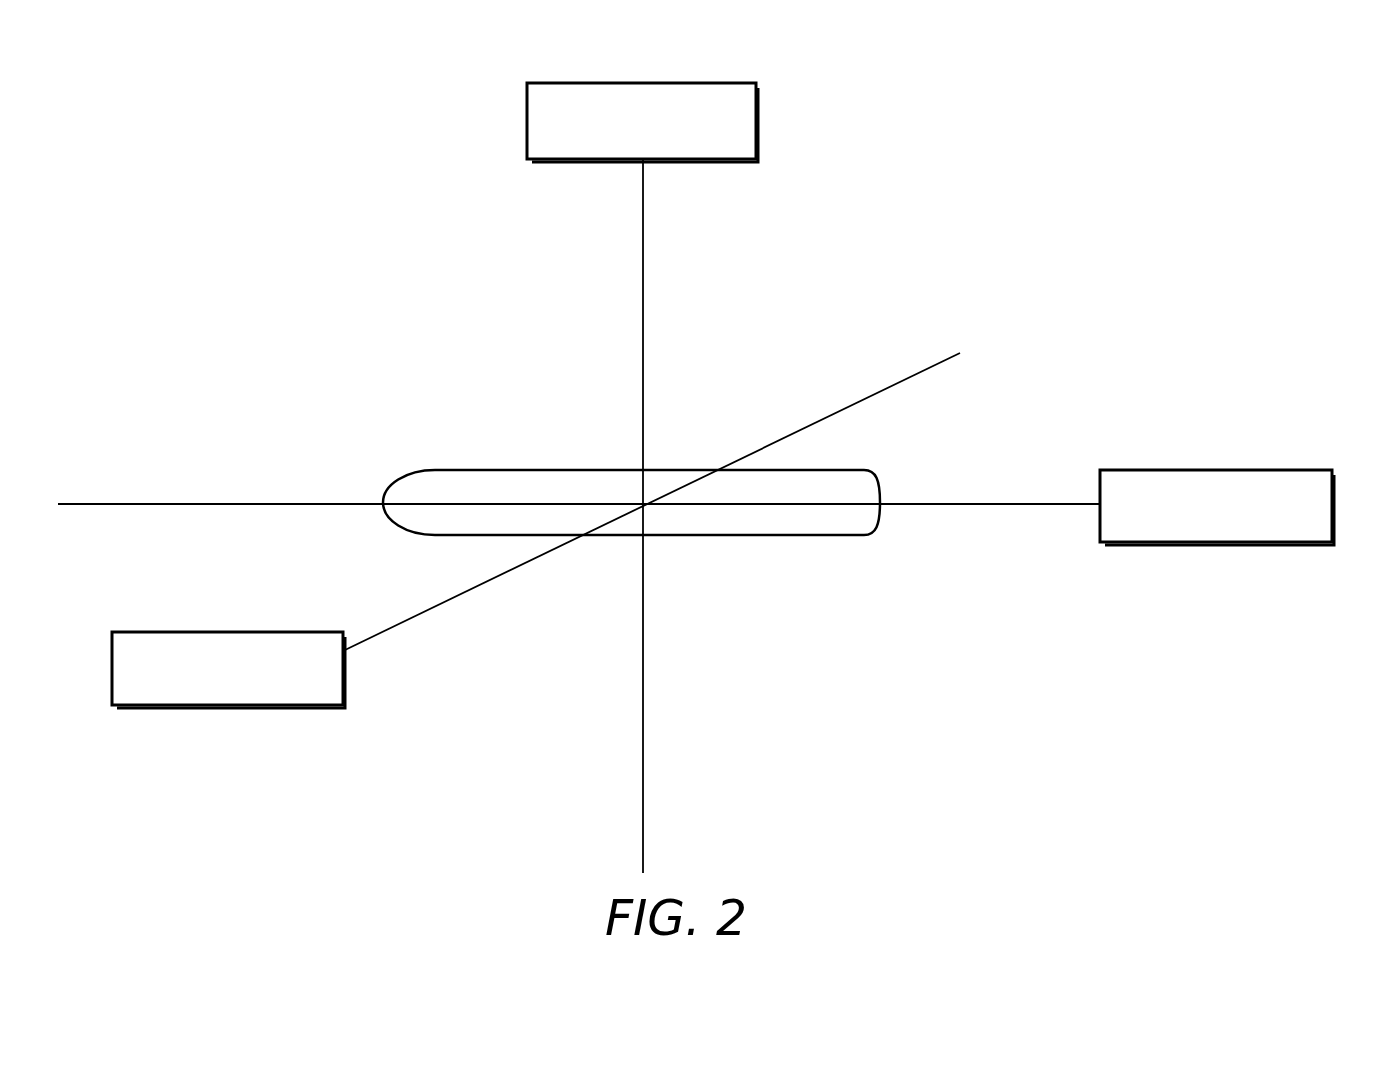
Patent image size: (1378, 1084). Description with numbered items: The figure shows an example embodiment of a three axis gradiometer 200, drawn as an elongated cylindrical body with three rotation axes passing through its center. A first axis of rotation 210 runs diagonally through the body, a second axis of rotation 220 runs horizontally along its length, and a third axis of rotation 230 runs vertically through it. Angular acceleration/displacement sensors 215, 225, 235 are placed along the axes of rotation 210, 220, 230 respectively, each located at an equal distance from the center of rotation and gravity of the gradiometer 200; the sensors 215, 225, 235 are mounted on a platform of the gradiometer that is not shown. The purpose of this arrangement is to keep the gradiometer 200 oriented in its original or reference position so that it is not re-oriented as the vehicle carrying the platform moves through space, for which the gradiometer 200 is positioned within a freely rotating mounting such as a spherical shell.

The gradiometer 200 is at (446, 469).
The first axis of rotation 210 is at (452, 598).
The angular acceleration/displacement sensor 215 is at (319, 632).
The second axis of rotation 220 is at (957, 508).
The angular acceleration/displacement sensor 225 is at (1310, 470).
The third axis of rotation 230 is at (643, 238).
The angular acceleration/displacement sensor 235 is at (734, 83).